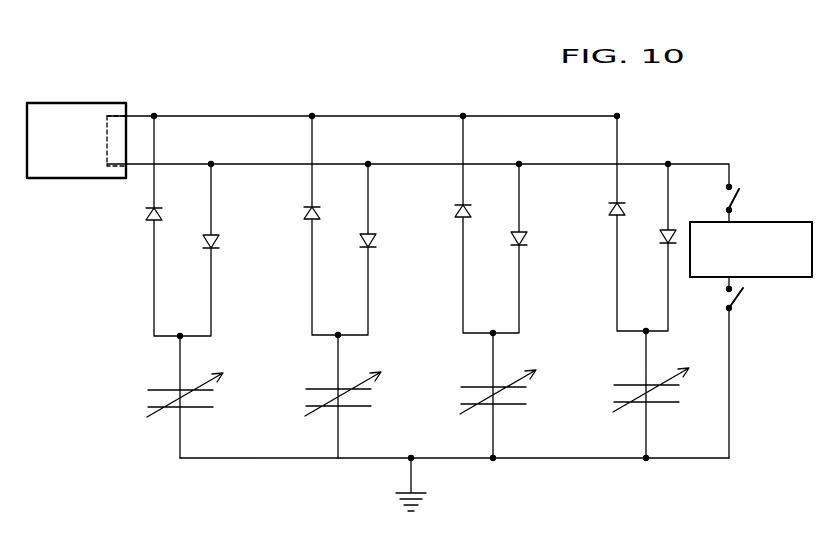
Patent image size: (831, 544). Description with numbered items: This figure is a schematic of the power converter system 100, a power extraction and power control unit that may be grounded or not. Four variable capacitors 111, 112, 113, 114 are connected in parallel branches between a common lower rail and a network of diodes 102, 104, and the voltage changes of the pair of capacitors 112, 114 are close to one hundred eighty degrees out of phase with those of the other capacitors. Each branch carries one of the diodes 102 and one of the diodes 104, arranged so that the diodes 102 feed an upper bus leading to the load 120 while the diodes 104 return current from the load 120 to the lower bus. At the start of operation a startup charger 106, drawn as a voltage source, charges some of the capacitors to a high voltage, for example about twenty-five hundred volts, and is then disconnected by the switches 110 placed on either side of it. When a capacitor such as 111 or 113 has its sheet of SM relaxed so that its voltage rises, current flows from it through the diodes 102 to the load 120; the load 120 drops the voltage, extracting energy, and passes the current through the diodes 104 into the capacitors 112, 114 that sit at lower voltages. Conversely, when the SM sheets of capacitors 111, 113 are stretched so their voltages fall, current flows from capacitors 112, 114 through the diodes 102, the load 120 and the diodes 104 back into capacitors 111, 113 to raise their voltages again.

The system 100 is at (110, 275).
The diodes 102 is at (147, 215).
The diodes 104 is at (202, 242).
The startup charger 106 is at (772, 222).
The switches 110 is at (740, 196).
The capacitor 111 is at (174, 389).
The capacitor 112 is at (332, 388).
The capacitor 113 is at (487, 386).
The capacitor 114 is at (640, 384).
The load 120 is at (62, 103).